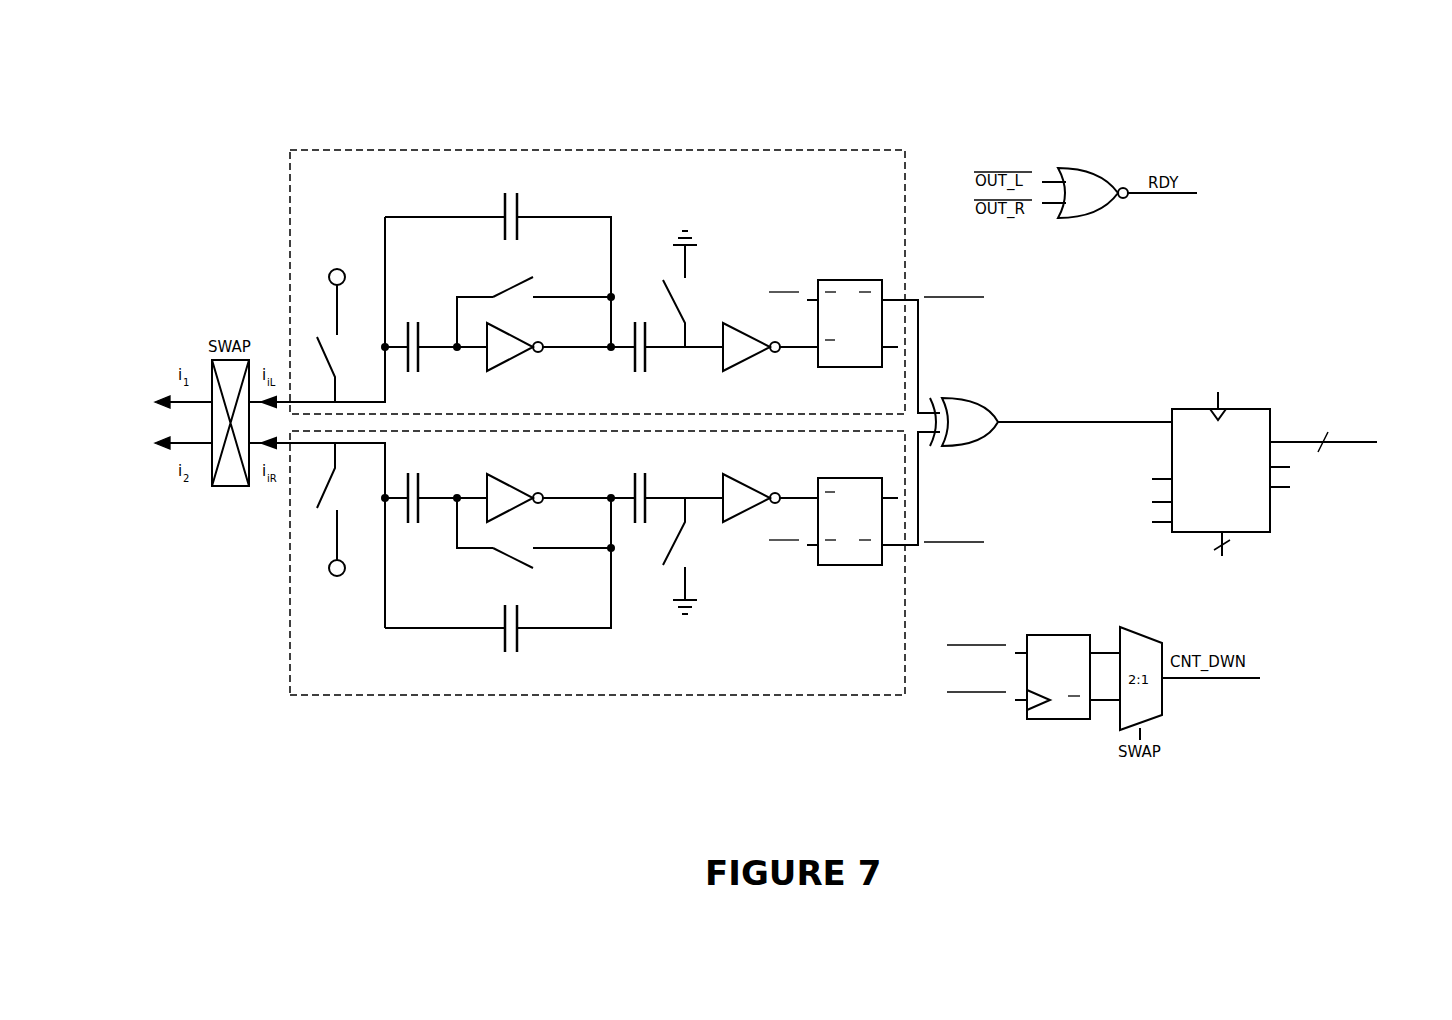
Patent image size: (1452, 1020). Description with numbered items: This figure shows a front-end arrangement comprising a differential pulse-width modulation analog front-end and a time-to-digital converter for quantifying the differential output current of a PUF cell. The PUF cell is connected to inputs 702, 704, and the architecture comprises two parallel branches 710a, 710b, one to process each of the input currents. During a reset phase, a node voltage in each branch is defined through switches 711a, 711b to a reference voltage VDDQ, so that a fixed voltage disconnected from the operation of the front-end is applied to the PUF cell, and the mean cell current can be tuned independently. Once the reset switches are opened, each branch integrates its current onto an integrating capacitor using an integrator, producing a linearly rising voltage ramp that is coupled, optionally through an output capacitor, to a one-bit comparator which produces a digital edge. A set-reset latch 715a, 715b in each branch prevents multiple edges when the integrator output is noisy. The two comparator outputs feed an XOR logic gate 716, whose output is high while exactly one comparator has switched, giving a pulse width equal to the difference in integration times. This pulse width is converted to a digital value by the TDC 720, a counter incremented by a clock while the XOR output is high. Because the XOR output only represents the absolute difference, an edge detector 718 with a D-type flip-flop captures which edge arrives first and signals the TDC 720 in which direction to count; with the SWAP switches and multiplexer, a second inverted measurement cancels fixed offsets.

The input 702 is at (166, 371).
The input 704 is at (165, 466).
The parallel branch 710a is at (559, 226).
The parallel branch 710b is at (566, 612).
The switch 711a is at (310, 305).
The switch 711b is at (320, 520).
The set-reset latch 715a is at (838, 272).
The set-reset latch 715b is at (832, 578).
The XOR logic gate 716 is at (982, 390).
The edge detector 718 is at (1052, 730).
The time-to-digital converter 720 is at (1245, 508).